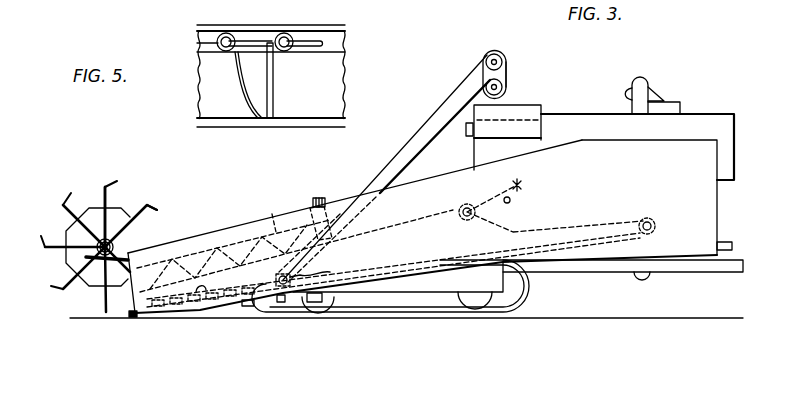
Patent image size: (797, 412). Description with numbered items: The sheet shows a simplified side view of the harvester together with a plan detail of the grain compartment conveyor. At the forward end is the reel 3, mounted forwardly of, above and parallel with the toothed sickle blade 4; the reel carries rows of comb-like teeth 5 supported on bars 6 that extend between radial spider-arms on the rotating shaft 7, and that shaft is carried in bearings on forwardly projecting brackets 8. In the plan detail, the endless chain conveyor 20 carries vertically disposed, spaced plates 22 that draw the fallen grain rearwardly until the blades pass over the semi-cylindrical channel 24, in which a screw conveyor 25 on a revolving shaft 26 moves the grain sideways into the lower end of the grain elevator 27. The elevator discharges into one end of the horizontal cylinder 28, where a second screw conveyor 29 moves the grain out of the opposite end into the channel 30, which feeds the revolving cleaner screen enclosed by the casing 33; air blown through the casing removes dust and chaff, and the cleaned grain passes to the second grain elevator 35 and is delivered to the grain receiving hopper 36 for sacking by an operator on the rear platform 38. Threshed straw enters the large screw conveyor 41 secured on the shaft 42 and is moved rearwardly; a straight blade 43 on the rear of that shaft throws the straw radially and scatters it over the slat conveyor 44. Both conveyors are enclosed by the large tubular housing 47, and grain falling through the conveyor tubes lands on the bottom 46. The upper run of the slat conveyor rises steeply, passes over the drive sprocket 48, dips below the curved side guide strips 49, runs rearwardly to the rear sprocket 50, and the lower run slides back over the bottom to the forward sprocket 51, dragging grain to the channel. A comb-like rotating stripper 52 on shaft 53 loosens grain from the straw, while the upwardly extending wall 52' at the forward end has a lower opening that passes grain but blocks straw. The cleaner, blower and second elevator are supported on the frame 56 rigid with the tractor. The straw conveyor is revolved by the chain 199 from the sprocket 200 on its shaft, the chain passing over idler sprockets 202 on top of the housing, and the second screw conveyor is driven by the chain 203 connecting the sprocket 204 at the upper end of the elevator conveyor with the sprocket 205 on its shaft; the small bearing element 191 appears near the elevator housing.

In FIG. 3, the reel 3 is at (66, 219).
In FIG. 3, the sickle blade 4 is at (132, 320).
In FIG. 3, the comb-like teeth 5 is at (152, 210).
In FIG. 3, the bars 6 is at (106, 188).
In FIG. 3, the rotating shaft 7 is at (118, 243).
In FIG. 3, the brackets 8 is at (100, 266).
In FIG. 5, the endless chain conveyor 20 is at (322, 50).
In FIG. 3, the endless chain conveyor 20 is at (197, 291).
In FIG. 5, the plates 22 is at (274, 93).
In FIG. 3, the channel 24 is at (247, 306).
In FIG. 3, the screw conveyor 25 is at (283, 285).
In FIG. 3, the revolving shaft 26 is at (277, 300).
In FIG. 3, the grain elevator 27 is at (427, 119).
In FIG. 3, the cylinder 28 is at (503, 89).
In FIG. 3, the second screw conveyor 29 is at (506, 71).
In FIG. 3, the channel 30 is at (536, 125).
In FIG. 3, the casing 33 is at (592, 113).
In FIG. 3, the second grain elevator 35 is at (633, 88).
In FIG. 3, the grain receiving hopper 36 is at (681, 104).
In FIG. 3, the platform 38 is at (729, 242).
In FIG. 3, the screw conveyor 41 is at (247, 240).
In FIG. 3, the shaft 42 is at (250, 248).
In FIG. 3, the blade 43 is at (273, 214).
In FIG. 3, the slat conveyor 44 is at (397, 272).
In FIG. 3, the bottom 46 is at (401, 272).
In FIG. 3, the tubular housing 47 is at (435, 178).
In FIG. 3, the drive sprocket 48 is at (467, 220).
In FIG. 3, the curved side guide strips 49 is at (528, 226).
In FIG. 3, the rear sprocket 50 is at (651, 230).
In FIG. 3, the forward sprocket 51 is at (318, 267).
In FIG. 3, the rotating stripper 52 is at (535, 183).
In FIG. 3, the wall 52' is at (311, 209).
In FIG. 3, the shaft 53 is at (510, 200).
In FIG. 3, the frame 56 is at (706, 281).
In FIG. 3, the bearing 191 is at (466, 130).
In FIG. 3, the chain 199 is at (332, 216).
In FIG. 3, the sprocket 200 is at (322, 224).
In FIG. 3, the idler sprockets 202 is at (319, 199).
In FIG. 3, the chain 203 is at (485, 68).
In FIG. 3, the sprocket 204 is at (501, 60).
In FIG. 3, the sprocket 205 is at (500, 92).